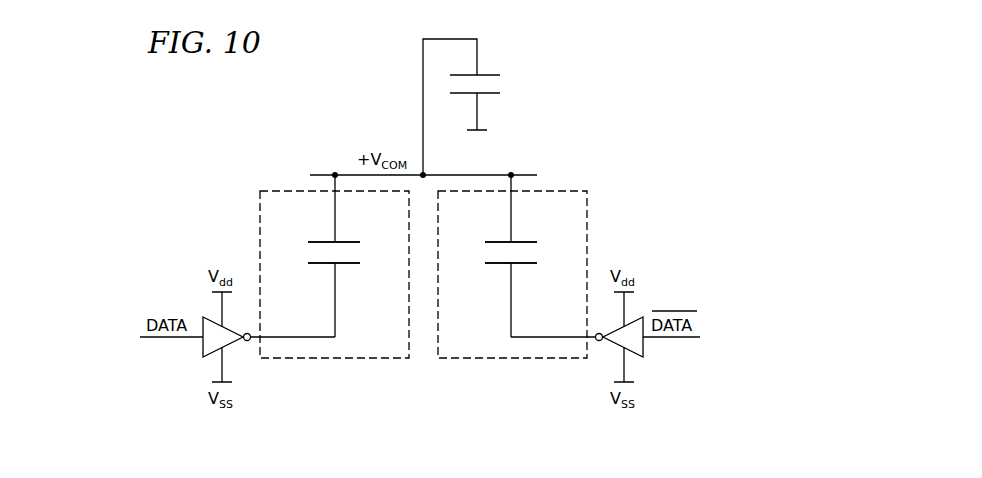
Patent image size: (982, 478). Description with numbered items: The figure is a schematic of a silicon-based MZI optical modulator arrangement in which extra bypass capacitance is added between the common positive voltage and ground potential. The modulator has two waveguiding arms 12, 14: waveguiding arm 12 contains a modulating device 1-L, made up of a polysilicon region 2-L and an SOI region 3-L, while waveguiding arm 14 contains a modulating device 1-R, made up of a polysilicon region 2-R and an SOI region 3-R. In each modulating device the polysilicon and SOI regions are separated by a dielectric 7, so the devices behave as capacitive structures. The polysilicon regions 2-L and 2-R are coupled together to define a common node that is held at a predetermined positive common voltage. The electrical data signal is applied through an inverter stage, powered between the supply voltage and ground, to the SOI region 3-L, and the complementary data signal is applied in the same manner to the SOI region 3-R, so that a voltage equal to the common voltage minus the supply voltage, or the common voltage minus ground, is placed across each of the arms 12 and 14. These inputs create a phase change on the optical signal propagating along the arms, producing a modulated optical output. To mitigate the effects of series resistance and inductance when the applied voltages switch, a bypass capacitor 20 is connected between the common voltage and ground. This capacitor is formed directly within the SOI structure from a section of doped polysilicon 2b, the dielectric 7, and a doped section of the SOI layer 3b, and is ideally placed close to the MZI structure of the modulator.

The waveguiding arm 12 is at (314, 270).
The waveguiding arm 14 is at (531, 269).
The bypass capacitor 20 is at (483, 107).
The doped polysilicon section 2b is at (479, 67).
The doped SOI layer section 3b is at (479, 100).
The modulating device 1-L is at (365, 360).
The modulating device 1-R is at (481, 360).
The polysilicon region 2-L is at (337, 215).
The SOI region 3-L is at (337, 311).
The polysilicon region 2-R is at (506, 213).
The SOI region 3-R is at (506, 308).
The dielectric 7 is at (310, 254).